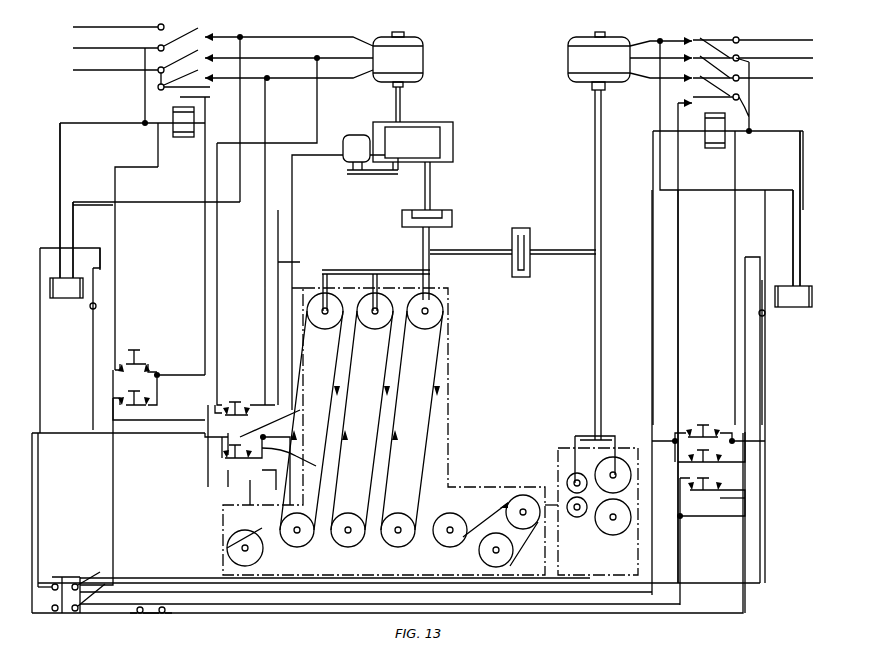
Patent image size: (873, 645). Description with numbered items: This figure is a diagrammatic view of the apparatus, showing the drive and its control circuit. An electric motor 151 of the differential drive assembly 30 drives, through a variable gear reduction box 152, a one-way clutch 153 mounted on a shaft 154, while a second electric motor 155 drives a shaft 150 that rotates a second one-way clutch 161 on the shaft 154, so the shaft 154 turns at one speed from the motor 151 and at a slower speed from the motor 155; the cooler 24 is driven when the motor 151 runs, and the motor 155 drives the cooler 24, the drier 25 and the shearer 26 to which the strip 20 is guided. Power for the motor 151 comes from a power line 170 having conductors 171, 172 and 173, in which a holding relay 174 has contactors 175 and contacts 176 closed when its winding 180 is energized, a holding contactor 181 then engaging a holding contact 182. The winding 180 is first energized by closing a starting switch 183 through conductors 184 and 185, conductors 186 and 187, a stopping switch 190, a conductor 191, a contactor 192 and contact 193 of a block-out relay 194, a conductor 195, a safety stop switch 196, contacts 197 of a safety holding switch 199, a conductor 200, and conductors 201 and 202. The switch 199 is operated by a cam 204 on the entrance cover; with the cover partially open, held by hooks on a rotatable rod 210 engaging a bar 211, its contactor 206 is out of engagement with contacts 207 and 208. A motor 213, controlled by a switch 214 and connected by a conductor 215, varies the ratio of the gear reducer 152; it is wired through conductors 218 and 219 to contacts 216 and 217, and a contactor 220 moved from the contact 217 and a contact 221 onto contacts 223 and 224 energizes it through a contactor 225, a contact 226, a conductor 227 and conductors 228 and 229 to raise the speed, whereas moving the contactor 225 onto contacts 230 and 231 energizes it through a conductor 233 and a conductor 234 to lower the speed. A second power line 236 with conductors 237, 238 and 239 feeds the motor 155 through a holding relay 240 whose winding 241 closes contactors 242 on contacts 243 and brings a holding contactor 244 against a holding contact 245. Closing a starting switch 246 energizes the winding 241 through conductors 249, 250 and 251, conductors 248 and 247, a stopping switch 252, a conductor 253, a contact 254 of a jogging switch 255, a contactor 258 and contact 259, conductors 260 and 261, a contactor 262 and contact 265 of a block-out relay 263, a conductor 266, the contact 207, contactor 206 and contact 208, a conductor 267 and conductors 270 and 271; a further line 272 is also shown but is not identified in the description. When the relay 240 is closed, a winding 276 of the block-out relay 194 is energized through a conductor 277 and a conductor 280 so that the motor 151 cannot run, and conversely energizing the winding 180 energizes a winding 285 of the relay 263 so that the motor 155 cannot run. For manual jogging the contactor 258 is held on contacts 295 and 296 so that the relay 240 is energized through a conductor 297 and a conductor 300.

The strip 20 is at (472, 499).
The cooler 24 is at (452, 352).
The drier 25 is at (560, 473).
The shearer 26 is at (640, 435).
The differential drive assembly 30 is at (423, 48).
The shaft 150 is at (590, 298).
The electric motor 151 is at (425, 52).
The variable gear reduction box 152 is at (438, 132).
The one-way clutch 153 is at (454, 218).
The shaft 154 is at (423, 238).
The second electric motor 155 is at (568, 80).
The second one-way clutch 161 is at (508, 274).
The power line 170 is at (64, 55).
The conductor 171 is at (92, 29).
The conductor 172 is at (92, 51).
The conductor 173 is at (92, 72).
The holding relay 174 is at (202, 158).
The contactors 175 is at (177, 33).
The contacts 176 is at (212, 52).
The winding 180 is at (182, 137).
The holding contactor 181 is at (178, 98).
The holding contact 182 is at (245, 100).
The starting switch 183 is at (140, 360).
The conductor 184 is at (158, 83).
The conductor 185 is at (156, 155).
The conductor 186 is at (147, 372).
The conductor 187 is at (158, 385).
The stopping switch 190 is at (138, 406).
The conductor 191 is at (236, 582).
The contactor 192 is at (760, 296).
The contact 193 is at (760, 282).
The block-out relay 194 is at (790, 312).
The conductor 195 is at (739, 614).
The safety stop switch 196 is at (137, 622).
The contacts 197 is at (103, 585).
The safety holding switch 199 is at (80, 574).
The conductor 200 is at (38, 531).
The conductor 201 is at (156, 127).
The conductor 202 is at (140, 110).
The cam 204 is at (57, 142).
The contactor 206 is at (42, 580).
The contact 207 is at (52, 592).
The contact 208 is at (97, 572).
The rotatable rod 210 is at (132, 198).
The bar 211 is at (218, 246).
The motor 213 is at (343, 166).
The switch 214 is at (208, 481).
The conductor 215 is at (318, 100).
The contact 216 is at (244, 400).
The contact 217 is at (264, 486).
The conductor 218 is at (278, 265).
The conductor 219 is at (292, 288).
The contactor 220 is at (246, 486).
The contact 221 is at (220, 458).
The contact 223 is at (226, 483).
The contact 224 is at (246, 490).
The contactor 225 is at (244, 408).
The contact 226 is at (240, 401).
The conductor 227 is at (190, 432).
The conductor 228 is at (254, 478).
The conductor 229 is at (292, 212).
The contact 230 is at (300, 408).
The contact 231 is at (321, 464).
The conductor 233 is at (220, 442).
The conductor 234 is at (264, 442).
The power line 236 is at (814, 66).
The conductor 237 is at (757, 36).
The conductor 238 is at (758, 57).
The conductor 239 is at (758, 77).
The holding relay 240 is at (705, 146).
The winding 241 is at (724, 144).
The contactors 242 is at (700, 36).
The contacts 243 is at (674, 58).
The holding contactor 244 is at (744, 100).
The holding contact 245 is at (673, 100).
The starting switch 246 is at (715, 418).
The conductor 247 is at (678, 456).
The conductor 248 is at (688, 430).
The conductor 249 is at (740, 88).
The conductor 250 is at (736, 232).
The conductor 251 is at (742, 432).
The stopping switch 252 is at (726, 462).
The conductor 253 is at (728, 476).
The contact 254 is at (721, 489).
The jogging switch 255 is at (720, 498).
The contactor 258 is at (714, 503).
The contact 259 is at (684, 477).
The conductor 260 is at (680, 516).
The conductor 261 is at (660, 604).
The contactor 262 is at (103, 276).
The block-out relay 263 is at (80, 302).
The contact 265 is at (95, 266).
The conductor 266 is at (38, 510).
The conductor 267 is at (214, 595).
The conductor 270 is at (751, 134).
The conductor 271 is at (760, 128).
The line 272 is at (678, 232).
The winding 276 is at (788, 286).
The conductor 277 is at (778, 190).
The conductor 280 is at (798, 193).
The winding 285 is at (66, 298).
The contact 295 is at (700, 516).
The contact 296 is at (716, 510).
The conductor 297 is at (750, 446).
The conductor 300 is at (682, 522).